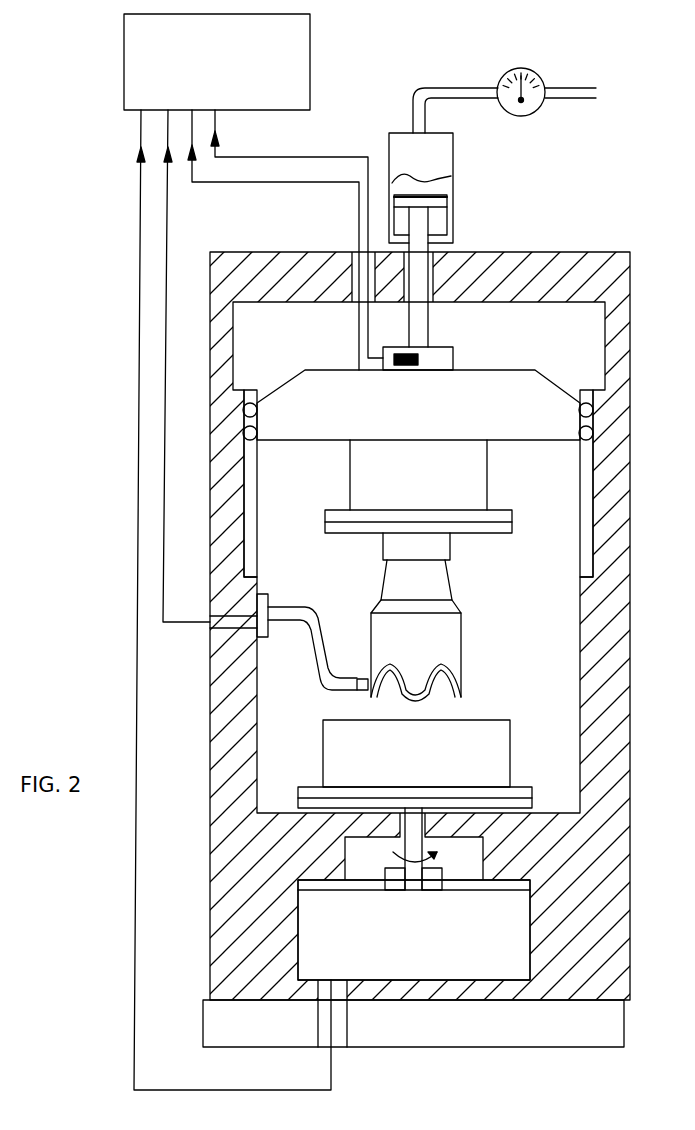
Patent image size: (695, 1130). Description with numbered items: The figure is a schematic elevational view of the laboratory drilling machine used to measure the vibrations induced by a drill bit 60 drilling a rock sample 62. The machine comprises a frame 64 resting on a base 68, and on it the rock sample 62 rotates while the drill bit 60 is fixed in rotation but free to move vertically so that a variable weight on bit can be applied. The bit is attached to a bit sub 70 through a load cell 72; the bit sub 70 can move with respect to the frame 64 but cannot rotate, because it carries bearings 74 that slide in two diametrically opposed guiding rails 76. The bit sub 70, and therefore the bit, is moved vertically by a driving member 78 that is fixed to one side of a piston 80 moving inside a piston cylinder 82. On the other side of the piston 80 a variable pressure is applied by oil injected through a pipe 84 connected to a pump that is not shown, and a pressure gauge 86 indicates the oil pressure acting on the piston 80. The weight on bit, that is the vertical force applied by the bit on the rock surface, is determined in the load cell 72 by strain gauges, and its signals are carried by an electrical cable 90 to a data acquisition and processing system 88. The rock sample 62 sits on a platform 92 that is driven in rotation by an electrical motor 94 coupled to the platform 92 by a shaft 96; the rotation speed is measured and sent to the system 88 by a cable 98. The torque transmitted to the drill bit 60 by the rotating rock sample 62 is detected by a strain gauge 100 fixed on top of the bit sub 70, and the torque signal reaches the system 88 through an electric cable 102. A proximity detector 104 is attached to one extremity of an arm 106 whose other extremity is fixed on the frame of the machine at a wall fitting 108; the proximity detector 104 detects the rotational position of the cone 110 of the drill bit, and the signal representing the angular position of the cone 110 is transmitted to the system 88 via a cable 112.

The drill bit 60 is at (436, 640).
The rock sample 62 is at (451, 767).
The frame 64 is at (612, 520).
The base 68 is at (478, 1036).
The bit sub 70 is at (432, 420).
The load cell 72 is at (432, 496).
The bearings 74 is at (245, 432).
The guiding rails 76 is at (250, 500).
The driving member 78 is at (420, 336).
The piston 80 is at (443, 201).
The piston cylinder 82 is at (455, 155).
The pipe 84 is at (563, 93).
The pressure gauge 86 is at (520, 69).
The data acquisition and processing system 88 is at (201, 76).
The electrical cable 90 is at (305, 182).
The platform 92 is at (519, 797).
The electrical motor 94 is at (401, 949).
The shaft 96 is at (407, 847).
The cable 98 is at (136, 944).
The strain gauge 100 is at (420, 362).
The electric cable 102 is at (308, 157).
The proximity detector 104 is at (360, 679).
The arm 106 is at (323, 652).
The wall fitting 108 is at (263, 598).
The cone 110 is at (388, 702).
The cable 112 is at (189, 626).